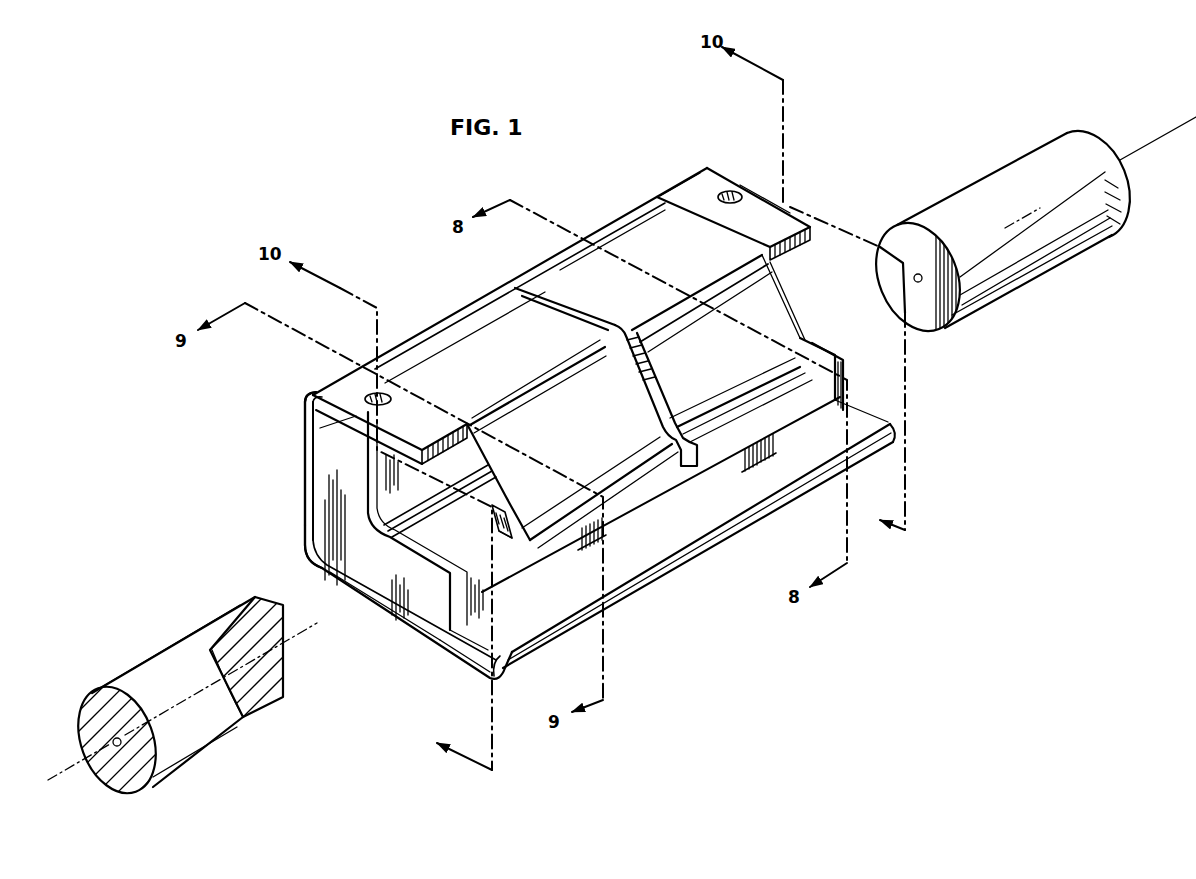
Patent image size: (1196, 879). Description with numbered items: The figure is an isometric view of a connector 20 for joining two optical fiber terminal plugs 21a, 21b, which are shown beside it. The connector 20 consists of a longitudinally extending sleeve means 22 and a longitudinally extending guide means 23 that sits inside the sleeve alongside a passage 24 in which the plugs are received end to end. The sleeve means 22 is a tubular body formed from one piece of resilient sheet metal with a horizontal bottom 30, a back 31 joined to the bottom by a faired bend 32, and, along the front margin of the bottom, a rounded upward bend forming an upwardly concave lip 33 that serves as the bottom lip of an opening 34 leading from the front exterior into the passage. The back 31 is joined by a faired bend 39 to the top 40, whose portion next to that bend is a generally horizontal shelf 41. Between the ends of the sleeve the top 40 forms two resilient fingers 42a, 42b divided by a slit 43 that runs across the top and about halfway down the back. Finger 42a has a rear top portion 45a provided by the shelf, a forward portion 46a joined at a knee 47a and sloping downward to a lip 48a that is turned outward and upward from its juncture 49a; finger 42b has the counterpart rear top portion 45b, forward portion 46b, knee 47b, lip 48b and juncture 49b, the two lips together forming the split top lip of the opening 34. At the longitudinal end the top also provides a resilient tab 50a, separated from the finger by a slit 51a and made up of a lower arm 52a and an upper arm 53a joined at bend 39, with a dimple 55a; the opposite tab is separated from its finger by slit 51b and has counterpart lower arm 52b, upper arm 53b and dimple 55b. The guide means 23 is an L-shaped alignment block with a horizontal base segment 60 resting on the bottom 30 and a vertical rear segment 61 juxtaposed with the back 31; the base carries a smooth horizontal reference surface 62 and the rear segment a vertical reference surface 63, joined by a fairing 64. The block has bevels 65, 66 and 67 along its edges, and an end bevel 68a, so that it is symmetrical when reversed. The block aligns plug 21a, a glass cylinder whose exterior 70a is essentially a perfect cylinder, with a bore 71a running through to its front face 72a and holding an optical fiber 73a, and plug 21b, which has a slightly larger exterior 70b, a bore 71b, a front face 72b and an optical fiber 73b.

The connector 20 is at (713, 610).
The optical fiber terminal plug 21a is at (186, 620).
The optical fiber terminal plug 21b is at (985, 165).
The sleeve means 22 is at (778, 262).
The guide means 23 is at (381, 570).
The passage 24 is at (466, 555).
The bottom 30 is at (412, 640).
The back 31 is at (318, 488).
The faired bend 32 is at (303, 554).
The lip 33 is at (727, 522).
The opening 34 is at (640, 505).
The faired bend 39 is at (312, 398).
The top 40 is at (687, 268).
The shelf 41 is at (600, 322).
The resilient finger 42a is at (620, 410).
The resilient finger 42b is at (710, 380).
The slit 43 is at (683, 467).
The rear top portion 45a is at (460, 334).
The rear top portion 45b is at (622, 236).
The forward portion 46a is at (495, 513).
The forward portion 46b is at (797, 330).
The knee 47a is at (500, 443).
The knee 47b is at (792, 300).
The lip 48a is at (615, 520).
The lip 48b is at (790, 400).
The juncture 49a is at (617, 460).
The juncture 49b is at (766, 371).
The resilient tab 50a is at (332, 392).
The slit 51a is at (372, 360).
The slit 51b is at (660, 195).
The lower arm 52a is at (312, 458).
The lower arm 52b is at (690, 176).
The upper arm 53a is at (353, 418).
The upper arm 53b is at (753, 185).
The dimple 55a is at (386, 396).
The dimple 55b is at (730, 190).
The base segment 60 is at (378, 612).
The rear segment 61 is at (325, 508).
The reference surface 62 is at (502, 545).
The reference surface 63 is at (455, 462).
The fairing 64 is at (368, 520).
The bevel 65 is at (318, 422).
The bevel 66 is at (322, 572).
The bevel 67 is at (449, 653).
The bevel 68a is at (400, 590).
The exterior 70a is at (128, 672).
The cylindrical exterior 70b is at (1060, 255).
The bore 71a is at (117, 745).
The bore 71b is at (920, 283).
The front face 72a is at (285, 665).
The front face 72b is at (898, 243).
The optical fiber 73a is at (86, 762).
The optical fiber 73b is at (1137, 150).